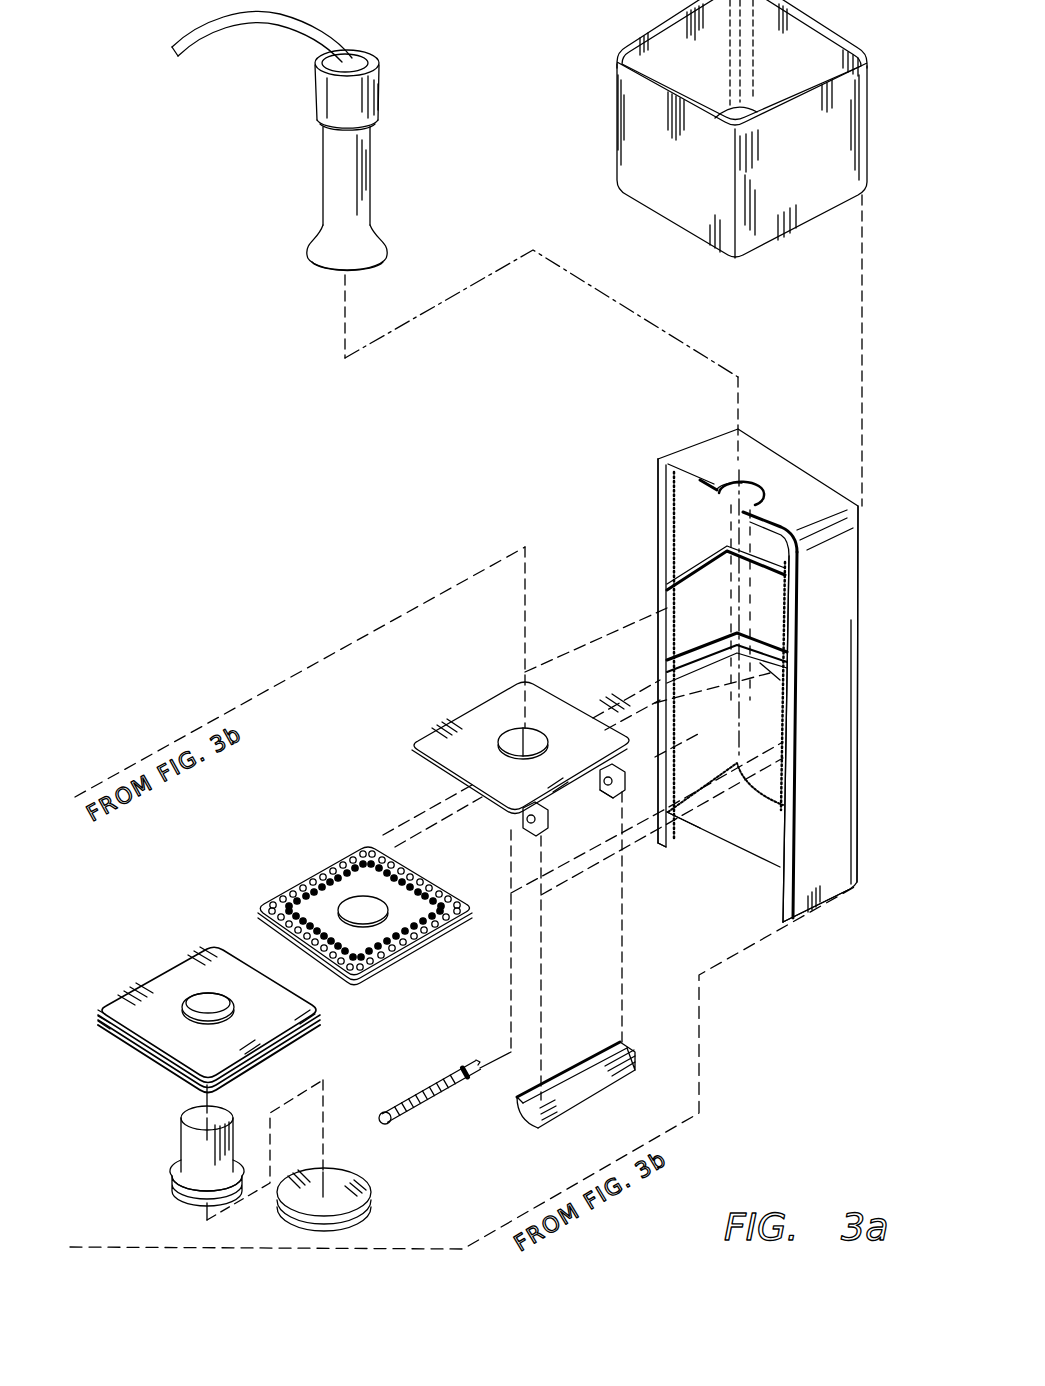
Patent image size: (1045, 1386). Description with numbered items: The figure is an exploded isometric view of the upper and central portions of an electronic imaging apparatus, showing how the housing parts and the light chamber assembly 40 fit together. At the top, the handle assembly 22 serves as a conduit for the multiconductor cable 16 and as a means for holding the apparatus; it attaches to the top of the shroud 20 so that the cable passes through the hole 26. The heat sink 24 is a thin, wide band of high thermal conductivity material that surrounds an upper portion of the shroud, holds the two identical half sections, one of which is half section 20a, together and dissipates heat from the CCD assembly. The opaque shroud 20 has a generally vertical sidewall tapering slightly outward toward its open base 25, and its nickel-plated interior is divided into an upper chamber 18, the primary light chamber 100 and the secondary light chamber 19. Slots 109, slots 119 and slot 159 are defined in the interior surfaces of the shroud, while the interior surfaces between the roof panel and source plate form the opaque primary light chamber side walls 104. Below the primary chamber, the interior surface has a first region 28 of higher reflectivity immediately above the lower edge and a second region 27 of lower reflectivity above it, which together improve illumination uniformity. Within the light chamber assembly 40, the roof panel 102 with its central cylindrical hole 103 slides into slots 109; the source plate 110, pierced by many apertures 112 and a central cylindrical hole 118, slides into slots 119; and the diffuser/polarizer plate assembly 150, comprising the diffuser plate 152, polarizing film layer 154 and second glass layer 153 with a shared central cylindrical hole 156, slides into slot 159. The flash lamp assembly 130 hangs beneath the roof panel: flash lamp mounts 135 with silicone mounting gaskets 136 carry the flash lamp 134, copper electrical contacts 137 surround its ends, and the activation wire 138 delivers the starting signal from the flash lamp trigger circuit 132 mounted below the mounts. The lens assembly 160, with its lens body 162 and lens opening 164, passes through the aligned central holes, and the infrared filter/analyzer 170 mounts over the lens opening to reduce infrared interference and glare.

The multiconductor cable 16 is at (252, 23).
The handle assembly 22 is at (374, 186).
The heat sink 24 is at (617, 117).
The shroud 20 is at (682, 450).
The half section 20a is at (858, 505).
The hole 26 is at (762, 482).
The upper chamber 18 is at (686, 496).
The slots 109 is at (700, 586).
The primary light chamber side walls 104 is at (705, 620).
The slots 119 is at (772, 614).
The slot 159 is at (782, 675).
The secondary light chamber 19 is at (762, 714).
The second region 27 is at (776, 786).
The first region 28 is at (770, 810).
The open base 25 is at (823, 903).
The light chamber assembly 40 is at (92, 665).
The primary light chamber 100 is at (258, 647).
The roof panel 102 is at (491, 746).
The central cylindrical hole 103 is at (500, 724).
The mounting gaskets 136 is at (606, 796).
The flash lamp mounts 135 is at (622, 802).
The source plate 110 is at (341, 904).
The apertures 112 is at (348, 856).
The central cylindrical hole 118 is at (388, 926).
The diffuser/polarizer plate assembly 150 is at (196, 1013).
The central cylindrical hole 156 is at (192, 996).
The diffuser plate 152 is at (114, 1012).
The second glass layer 153 is at (126, 1040).
The polarizing film layer 154 is at (148, 1056).
The lens assembly 160 is at (156, 1168).
The lens body 162 is at (188, 1142).
The lens opening 164 is at (192, 1198).
The infrared filter/analyzer 170 is at (371, 1213).
The flash lamp assembly 130 is at (650, 1122).
The flash lamp 134 is at (415, 1072).
The electrical contacts 137 is at (386, 1112).
The activation wire 138 is at (433, 1086).
The flash lamp trigger circuit 132 is at (628, 1078).